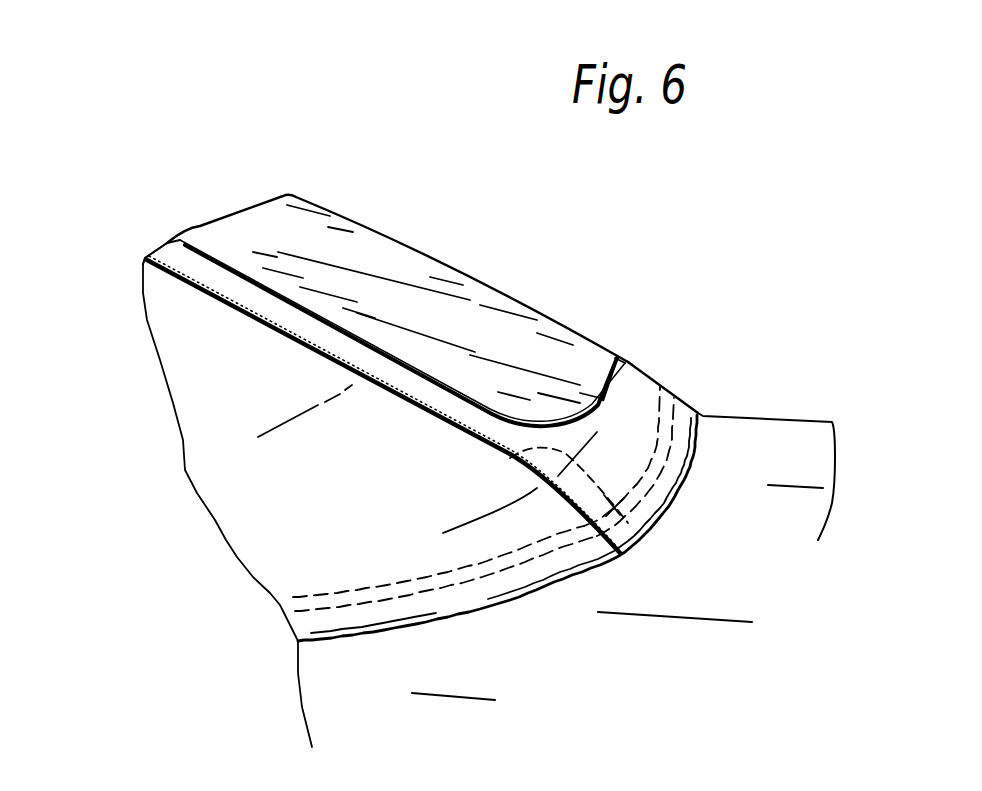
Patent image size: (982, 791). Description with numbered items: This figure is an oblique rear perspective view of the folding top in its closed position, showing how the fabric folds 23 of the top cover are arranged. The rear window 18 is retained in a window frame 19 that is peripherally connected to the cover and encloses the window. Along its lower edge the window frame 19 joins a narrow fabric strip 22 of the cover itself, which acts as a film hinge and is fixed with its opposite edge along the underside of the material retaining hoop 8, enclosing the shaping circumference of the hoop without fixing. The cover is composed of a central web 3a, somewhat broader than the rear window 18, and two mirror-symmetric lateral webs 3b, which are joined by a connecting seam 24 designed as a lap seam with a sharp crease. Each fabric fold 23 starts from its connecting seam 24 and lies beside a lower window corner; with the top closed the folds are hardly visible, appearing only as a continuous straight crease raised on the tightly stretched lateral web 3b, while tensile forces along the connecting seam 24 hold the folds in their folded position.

The central web 3a is at (167, 243).
The lateral web 3b is at (232, 413).
The material retaining hoop 8 is at (508, 586).
The rear window 18 is at (468, 305).
The window frame 19 is at (615, 358).
The fabric strip 22 is at (640, 405).
The fabric fold 23 is at (653, 535).
The connecting seam 24 is at (180, 277).